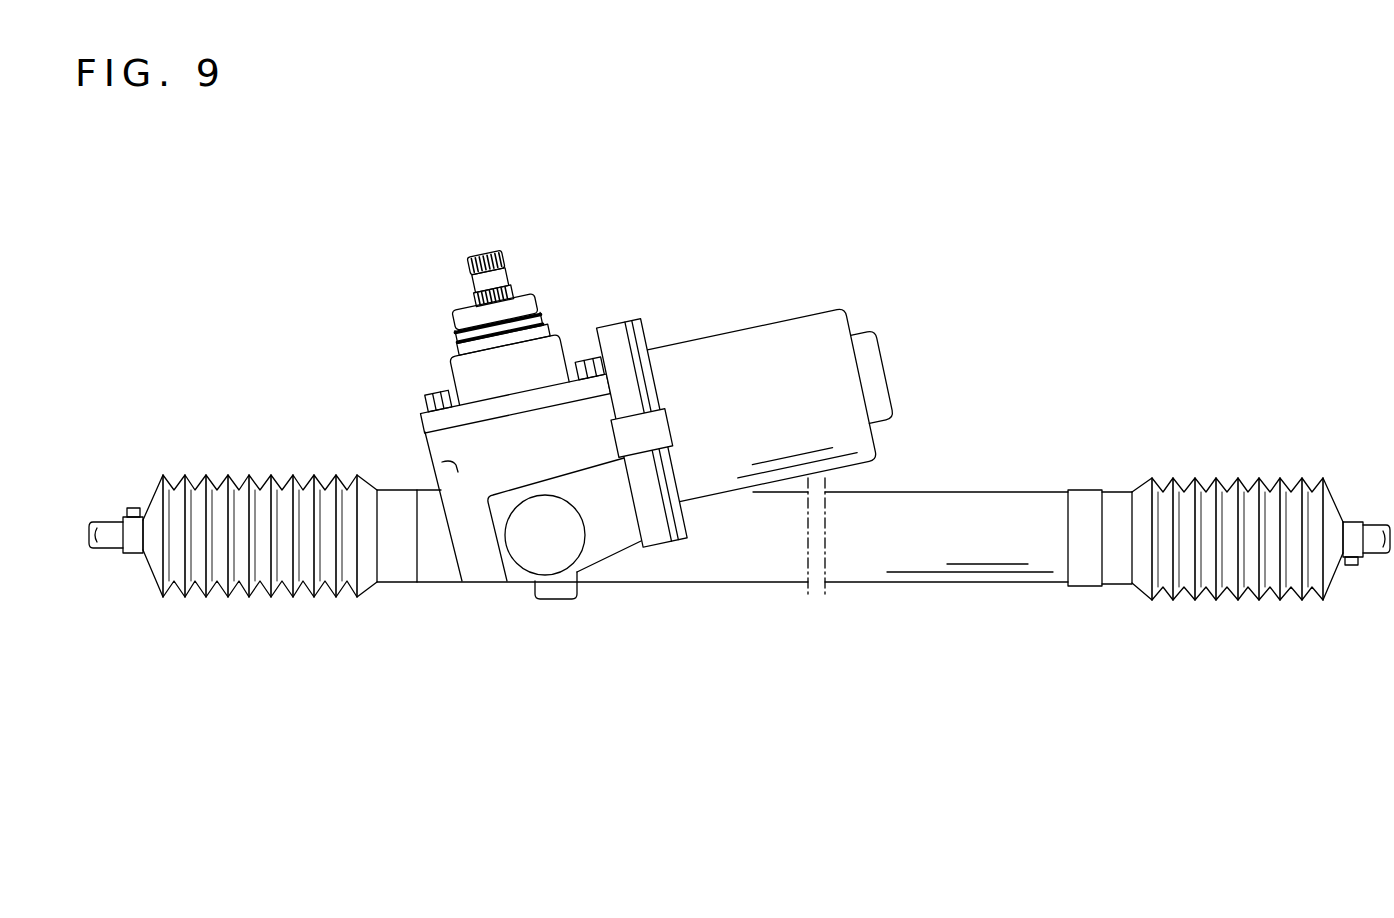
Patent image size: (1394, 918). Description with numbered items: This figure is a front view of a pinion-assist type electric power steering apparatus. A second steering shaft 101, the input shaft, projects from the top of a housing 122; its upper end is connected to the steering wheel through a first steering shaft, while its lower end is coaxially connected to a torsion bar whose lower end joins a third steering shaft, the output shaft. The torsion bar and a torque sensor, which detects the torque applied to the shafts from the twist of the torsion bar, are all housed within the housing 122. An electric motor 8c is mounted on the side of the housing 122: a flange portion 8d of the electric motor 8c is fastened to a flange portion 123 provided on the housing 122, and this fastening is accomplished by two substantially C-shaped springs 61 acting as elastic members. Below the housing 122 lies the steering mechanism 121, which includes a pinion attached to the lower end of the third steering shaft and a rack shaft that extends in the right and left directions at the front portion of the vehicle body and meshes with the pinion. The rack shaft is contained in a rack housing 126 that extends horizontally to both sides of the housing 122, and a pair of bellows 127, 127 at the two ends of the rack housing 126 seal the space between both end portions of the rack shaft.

The second steering shaft 101 is at (503, 258).
The electric motor 8c is at (750, 324).
The flange portion 8d is at (632, 320).
The housing 122 is at (408, 407).
The flange portion 123 is at (648, 533).
The substantially C-shaped springs 61 is at (618, 457).
The steering mechanism 121 is at (590, 603).
The rack housing 126 is at (435, 585).
The bellows 127 is at (265, 600).